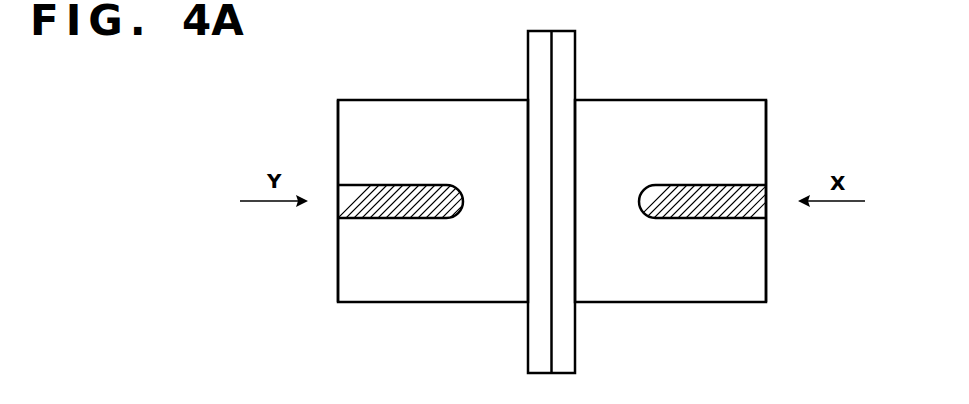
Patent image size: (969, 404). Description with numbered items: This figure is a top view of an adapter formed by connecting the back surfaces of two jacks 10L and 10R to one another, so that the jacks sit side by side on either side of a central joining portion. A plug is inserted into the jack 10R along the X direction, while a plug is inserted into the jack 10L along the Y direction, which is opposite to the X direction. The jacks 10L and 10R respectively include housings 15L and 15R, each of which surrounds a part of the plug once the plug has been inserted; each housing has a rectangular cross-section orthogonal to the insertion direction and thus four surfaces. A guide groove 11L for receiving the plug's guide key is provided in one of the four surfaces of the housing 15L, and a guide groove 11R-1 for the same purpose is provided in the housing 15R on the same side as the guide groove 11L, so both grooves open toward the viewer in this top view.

The jack 10L is at (416, 75).
The jack 10R is at (668, 77).
The housing 15L is at (338, 100).
The housing 15R is at (766, 100).
The guide groove 11L is at (434, 185).
The guide groove 11R-1 is at (688, 185).